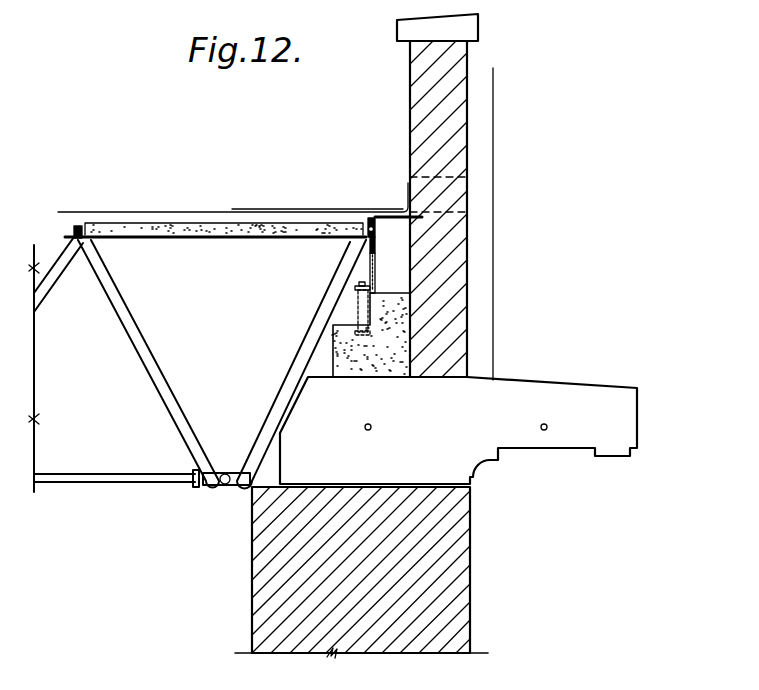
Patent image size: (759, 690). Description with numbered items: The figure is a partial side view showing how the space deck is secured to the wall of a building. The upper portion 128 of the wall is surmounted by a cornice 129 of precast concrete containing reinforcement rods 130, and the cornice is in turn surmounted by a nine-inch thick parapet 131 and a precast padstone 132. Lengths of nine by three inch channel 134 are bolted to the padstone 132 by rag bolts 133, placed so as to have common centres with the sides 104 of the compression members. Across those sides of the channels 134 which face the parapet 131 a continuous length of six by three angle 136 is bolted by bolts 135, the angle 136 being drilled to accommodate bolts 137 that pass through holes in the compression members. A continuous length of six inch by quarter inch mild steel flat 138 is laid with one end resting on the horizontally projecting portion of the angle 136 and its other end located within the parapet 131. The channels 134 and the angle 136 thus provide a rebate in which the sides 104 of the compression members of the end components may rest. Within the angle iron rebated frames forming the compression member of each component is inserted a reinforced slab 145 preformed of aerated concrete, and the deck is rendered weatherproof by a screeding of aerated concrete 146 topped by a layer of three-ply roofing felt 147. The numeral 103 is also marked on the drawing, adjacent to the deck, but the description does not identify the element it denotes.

The roof deck 103 is at (85, 222).
The sides of the compression members 104 is at (75, 228).
The upper portion of a wall 128 is at (448, 530).
The cornice 129 is at (590, 435).
The reinforcement rods 130 is at (396, 409).
The parapet 131 is at (448, 356).
The precast padstone 132 is at (340, 362).
The rag bolts 133 is at (356, 326).
The channel 134 is at (368, 268).
The bolts 135 is at (374, 252).
The angle 136 is at (415, 220).
The bolts 137 is at (373, 230).
The mild steel flat 138 is at (412, 212).
The reinforced slab 145 is at (145, 232).
The screeding of aerated concrete 146 is at (220, 222).
The roofing felt 147 is at (277, 211).